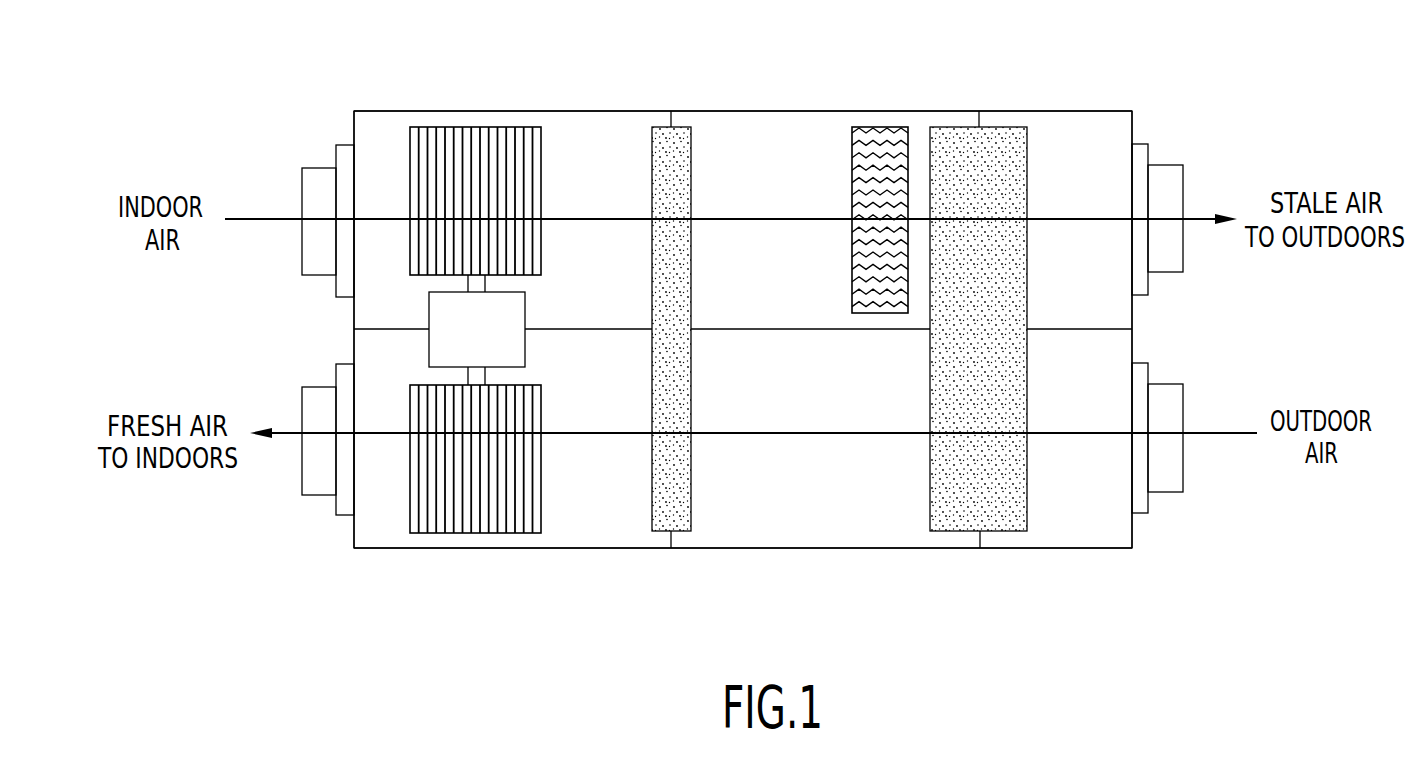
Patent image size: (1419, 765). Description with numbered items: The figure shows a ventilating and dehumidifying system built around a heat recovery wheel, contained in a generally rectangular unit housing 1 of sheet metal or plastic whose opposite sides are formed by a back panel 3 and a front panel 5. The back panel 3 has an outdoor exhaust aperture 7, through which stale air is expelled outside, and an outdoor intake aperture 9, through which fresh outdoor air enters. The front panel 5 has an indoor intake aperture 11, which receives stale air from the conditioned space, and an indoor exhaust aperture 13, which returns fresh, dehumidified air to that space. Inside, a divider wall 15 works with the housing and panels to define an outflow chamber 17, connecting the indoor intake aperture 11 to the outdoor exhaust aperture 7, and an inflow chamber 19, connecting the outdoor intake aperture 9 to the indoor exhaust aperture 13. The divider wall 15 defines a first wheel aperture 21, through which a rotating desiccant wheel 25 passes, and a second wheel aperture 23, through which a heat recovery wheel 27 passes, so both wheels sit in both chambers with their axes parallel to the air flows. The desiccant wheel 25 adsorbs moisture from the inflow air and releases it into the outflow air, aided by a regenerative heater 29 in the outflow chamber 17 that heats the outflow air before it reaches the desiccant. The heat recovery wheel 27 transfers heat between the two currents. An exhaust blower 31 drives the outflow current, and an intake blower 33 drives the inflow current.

The unit housing 1 is at (740, 110).
The back panel 3 is at (1132, 343).
The front panel 5 is at (353, 317).
The outdoor exhaust aperture 7 is at (1132, 183).
The outdoor intake aperture 9 is at (1132, 500).
The indoor intake aperture 11 is at (338, 187).
The indoor exhaust aperture 13 is at (353, 481).
The divider wall 15 is at (777, 328).
The outflow chamber 17 is at (792, 147).
The inflow chamber 19 is at (812, 515).
The first wheel aperture 21 is at (1027, 329).
The second wheel aperture 23 is at (652, 330).
The rotating desiccant wheel 25 is at (930, 507).
The heat recovery wheel 27 is at (692, 505).
The regenerative heater 29 is at (883, 128).
The exhaust blower 31 is at (542, 165).
The intake blower 33 is at (412, 510).